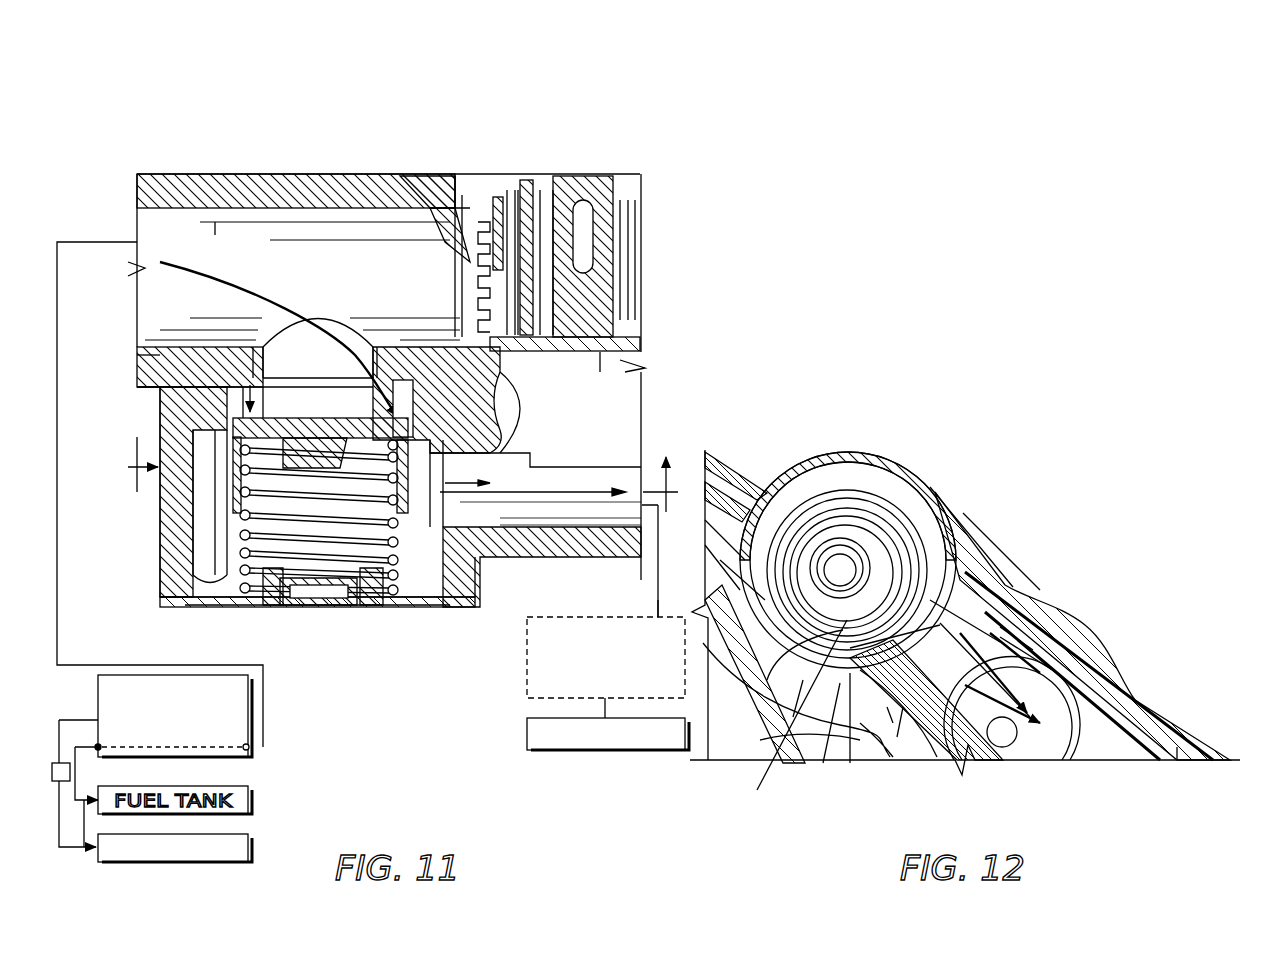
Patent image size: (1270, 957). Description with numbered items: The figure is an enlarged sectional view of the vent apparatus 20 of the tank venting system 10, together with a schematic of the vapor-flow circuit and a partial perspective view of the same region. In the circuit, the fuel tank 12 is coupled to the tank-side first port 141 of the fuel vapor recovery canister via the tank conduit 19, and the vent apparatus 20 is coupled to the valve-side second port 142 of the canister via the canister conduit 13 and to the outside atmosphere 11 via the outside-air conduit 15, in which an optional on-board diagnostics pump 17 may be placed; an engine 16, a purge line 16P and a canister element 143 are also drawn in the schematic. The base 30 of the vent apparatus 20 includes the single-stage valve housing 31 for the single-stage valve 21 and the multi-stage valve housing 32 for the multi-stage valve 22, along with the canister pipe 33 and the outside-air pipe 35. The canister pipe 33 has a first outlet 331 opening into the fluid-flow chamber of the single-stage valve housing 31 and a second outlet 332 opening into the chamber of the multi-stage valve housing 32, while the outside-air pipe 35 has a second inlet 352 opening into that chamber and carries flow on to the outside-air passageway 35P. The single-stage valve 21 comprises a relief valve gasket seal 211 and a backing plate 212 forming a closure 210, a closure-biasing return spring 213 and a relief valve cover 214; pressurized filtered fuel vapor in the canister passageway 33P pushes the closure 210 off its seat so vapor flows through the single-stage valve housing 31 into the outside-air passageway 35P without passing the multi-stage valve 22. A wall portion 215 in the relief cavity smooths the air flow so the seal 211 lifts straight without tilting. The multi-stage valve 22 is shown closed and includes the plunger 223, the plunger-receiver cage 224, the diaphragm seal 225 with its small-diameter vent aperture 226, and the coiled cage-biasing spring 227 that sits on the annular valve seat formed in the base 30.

In FIG. 11, the tank venting system 10 is at (664, 118).
In FIG. 11, the outside atmosphere 11 is at (527, 738).
In FIG. 11, the fuel tank 12 is at (278, 818).
In FIG. 11, the canister conduit 13 is at (88, 242).
In FIG. 11, the outside-air conduit 15 is at (660, 570).
In FIG. 11, the engine 16 is at (250, 850).
In FIG. 11, the purge valve 16P is at (66, 782).
In FIG. 11, the on-board diagnostics (OBD) pump 17 is at (527, 662).
In FIG. 11, the tank conduit 19 is at (85, 820).
In FIG. 11, the vent apparatus 20 is at (407, 187).
In FIG. 12, the vent apparatus 20 is at (1030, 496).
In FIG. 11, the single-stage valve 21 is at (230, 612).
In FIG. 12, the single-stage valve 21 is at (1070, 688).
In FIG. 11, the multi-stage valve 22 is at (563, 183).
In FIG. 12, the multi-stage valve 22 is at (893, 497).
In FIG. 11, the base 30 is at (188, 172).
In FIG. 12, the base 30 is at (1013, 580).
In FIG. 12, the single-stage valve housing 31 is at (1056, 650).
In FIG. 12, the multi-stage valve housing 32 is at (823, 446).
In FIG. 11, the canister pipe 33 is at (294, 172).
In FIG. 11, the canister passageway 33P is at (220, 248).
In FIG. 11, the outside-air pipe 35 is at (566, 558).
In FIG. 11, the outside-air passageway 35P is at (618, 447).
In FIG. 11, the tank-side first port 141 is at (96, 746).
In FIG. 11, the valve-side second port 142 is at (250, 750).
In FIG. 11, the canister interface 143 is at (170, 750).
In FIG. 11, the closure 210 is at (110, 372).
In FIG. 11, the relief valve gasket seal 211 is at (143, 358).
In FIG. 11, the backing plate 212 is at (222, 500).
In FIG. 11, the closure-biasing return spring 213 is at (350, 542).
In FIG. 11, the relief valve cover 214 is at (430, 612).
In FIG. 11, the wall portion 215 is at (384, 548).
In FIG. 12, the wall portion 215 is at (792, 715).
In FIG. 11, the plunger 223 is at (590, 183).
In FIG. 11, the plunger-receiver cage 224 is at (610, 343).
In FIG. 11, the diaphragm seal 225 is at (600, 360).
In FIG. 12, the diaphragm seal 225 is at (888, 560).
In FIG. 12, the small-diameter vent aperture 226 is at (843, 557).
In FIG. 11, the coiled cage-biasing spring 227 is at (475, 296).
In FIG. 11, the first outlet 331 is at (263, 345).
In FIG. 11, the second outlet 332 is at (470, 279).
In FIG. 11, the second inlet 352 is at (505, 392).